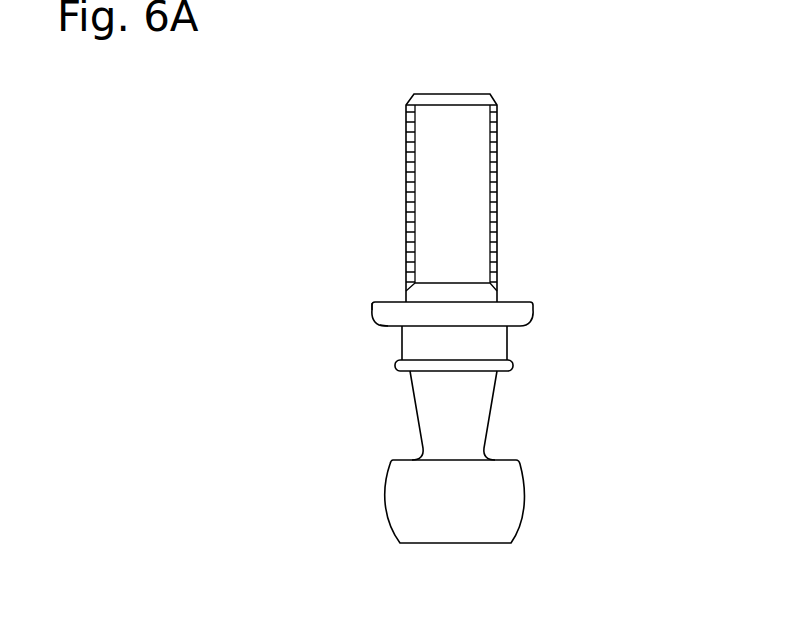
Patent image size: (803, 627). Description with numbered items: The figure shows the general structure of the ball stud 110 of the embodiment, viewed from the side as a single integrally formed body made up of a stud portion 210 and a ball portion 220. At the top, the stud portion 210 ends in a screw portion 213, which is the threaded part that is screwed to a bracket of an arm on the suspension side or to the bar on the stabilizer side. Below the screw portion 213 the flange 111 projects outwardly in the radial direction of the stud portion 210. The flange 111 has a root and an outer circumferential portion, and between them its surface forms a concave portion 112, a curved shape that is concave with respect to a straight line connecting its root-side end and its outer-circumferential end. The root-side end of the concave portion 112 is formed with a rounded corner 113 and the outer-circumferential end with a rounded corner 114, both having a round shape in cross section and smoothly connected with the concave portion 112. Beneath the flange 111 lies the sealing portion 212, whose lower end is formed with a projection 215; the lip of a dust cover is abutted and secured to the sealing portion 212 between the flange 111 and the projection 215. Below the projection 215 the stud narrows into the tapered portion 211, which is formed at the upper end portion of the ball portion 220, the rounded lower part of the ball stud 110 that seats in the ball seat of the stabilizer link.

The ball stud 110 is at (523, 127).
The flange 111 is at (503, 310).
The concave portion 112 is at (374, 318).
The rounded corner 113 is at (382, 327).
The rounded corner 114 is at (370, 309).
The stud portion 210 is at (432, 169).
The tapered portion 211 is at (438, 407).
The sealing portion 212 is at (487, 350).
The screw portion 213 is at (495, 187).
The projection 215 is at (512, 369).
The ball portion 220 is at (505, 503).